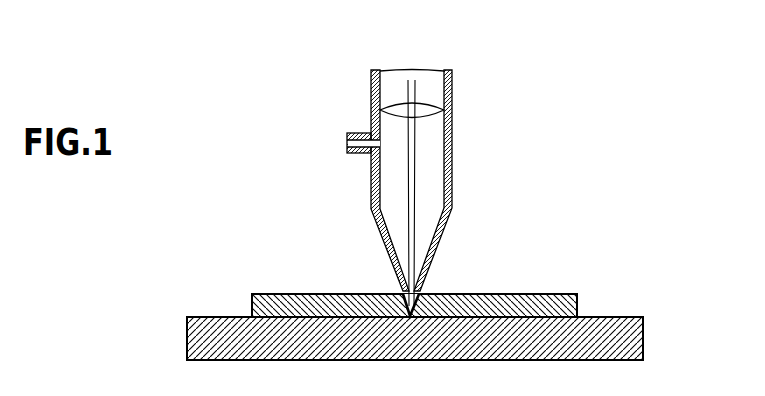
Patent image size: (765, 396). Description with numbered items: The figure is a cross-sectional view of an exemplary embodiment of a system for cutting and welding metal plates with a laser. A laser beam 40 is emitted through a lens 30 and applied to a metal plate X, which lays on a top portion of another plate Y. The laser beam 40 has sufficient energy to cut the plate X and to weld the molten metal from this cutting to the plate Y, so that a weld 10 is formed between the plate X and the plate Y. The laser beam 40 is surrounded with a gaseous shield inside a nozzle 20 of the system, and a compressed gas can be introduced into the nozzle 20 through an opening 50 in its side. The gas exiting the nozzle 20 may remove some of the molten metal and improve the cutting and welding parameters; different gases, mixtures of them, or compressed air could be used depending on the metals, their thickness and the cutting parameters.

The weld 10 is at (423, 292).
The nozzle 20 is at (453, 190).
The lens 30 is at (445, 116).
The laser beam 40 is at (417, 83).
The opening 50 is at (347, 143).
The metal plate X is at (577, 302).
The plate Y is at (643, 339).